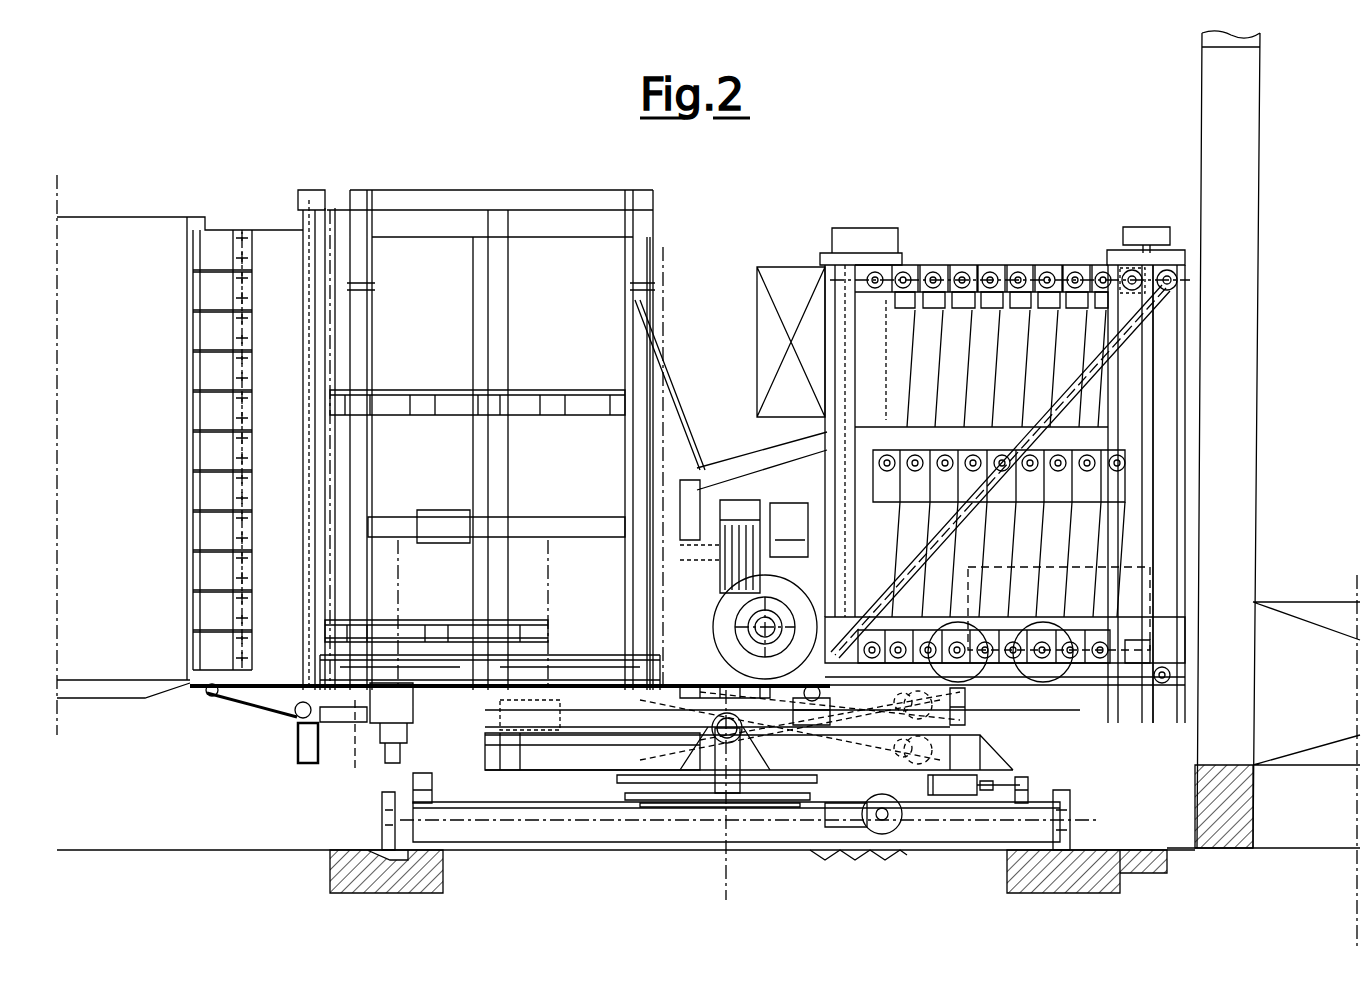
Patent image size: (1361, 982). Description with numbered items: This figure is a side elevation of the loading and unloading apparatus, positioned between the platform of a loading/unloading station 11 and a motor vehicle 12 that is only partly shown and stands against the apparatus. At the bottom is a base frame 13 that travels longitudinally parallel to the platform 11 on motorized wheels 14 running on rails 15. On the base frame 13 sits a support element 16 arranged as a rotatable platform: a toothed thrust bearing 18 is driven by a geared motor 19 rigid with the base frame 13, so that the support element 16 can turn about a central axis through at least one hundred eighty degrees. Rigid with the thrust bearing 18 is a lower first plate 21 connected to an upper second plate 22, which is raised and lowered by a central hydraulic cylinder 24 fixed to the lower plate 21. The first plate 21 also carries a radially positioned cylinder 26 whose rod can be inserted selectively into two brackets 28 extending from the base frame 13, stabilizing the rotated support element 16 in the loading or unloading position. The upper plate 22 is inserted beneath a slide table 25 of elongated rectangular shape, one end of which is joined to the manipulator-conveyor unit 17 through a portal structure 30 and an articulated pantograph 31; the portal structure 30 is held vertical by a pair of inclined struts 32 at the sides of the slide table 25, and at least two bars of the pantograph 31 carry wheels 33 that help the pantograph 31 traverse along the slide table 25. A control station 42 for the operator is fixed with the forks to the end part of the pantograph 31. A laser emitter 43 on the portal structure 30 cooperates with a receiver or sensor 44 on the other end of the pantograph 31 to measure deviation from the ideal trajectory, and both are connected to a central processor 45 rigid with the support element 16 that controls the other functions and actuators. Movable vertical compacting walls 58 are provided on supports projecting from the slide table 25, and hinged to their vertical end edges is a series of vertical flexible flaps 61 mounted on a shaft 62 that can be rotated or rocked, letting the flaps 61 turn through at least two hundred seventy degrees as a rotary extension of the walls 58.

The loading/unloading station platform 11 is at (1325, 605).
The motor vehicle 12 is at (108, 680).
The base frame 13 is at (580, 845).
The motorized wheels 14 is at (382, 797).
The rails 15 is at (385, 852).
The support element 16 is at (983, 724).
The manipulator-conveyor unit 17 is at (745, 445).
The toothed thrust bearing 18 is at (690, 808).
The geared motor 19 is at (905, 832).
The lower first plate 21 is at (490, 747).
The upper second plate 22 is at (968, 702).
The hydraulic cylinder 24 is at (730, 800).
The slide table 25 is at (1055, 685).
The cylinder 26 is at (950, 797).
The brackets 28 is at (415, 782).
The portal structure 30 is at (1175, 320).
The articulated pantograph 31 is at (1005, 262).
The inclined struts 32 is at (1090, 367).
The wheels 33 is at (1040, 640).
The control station 42 is at (770, 320).
The laser emitter 43 is at (1130, 232).
The receiver or sensor 44 is at (885, 238).
The central processor 45 is at (1165, 565).
The movable vertical walls 58 is at (475, 200).
The vertical flexible flaps 61 is at (197, 490).
The shaft 62 is at (308, 190).